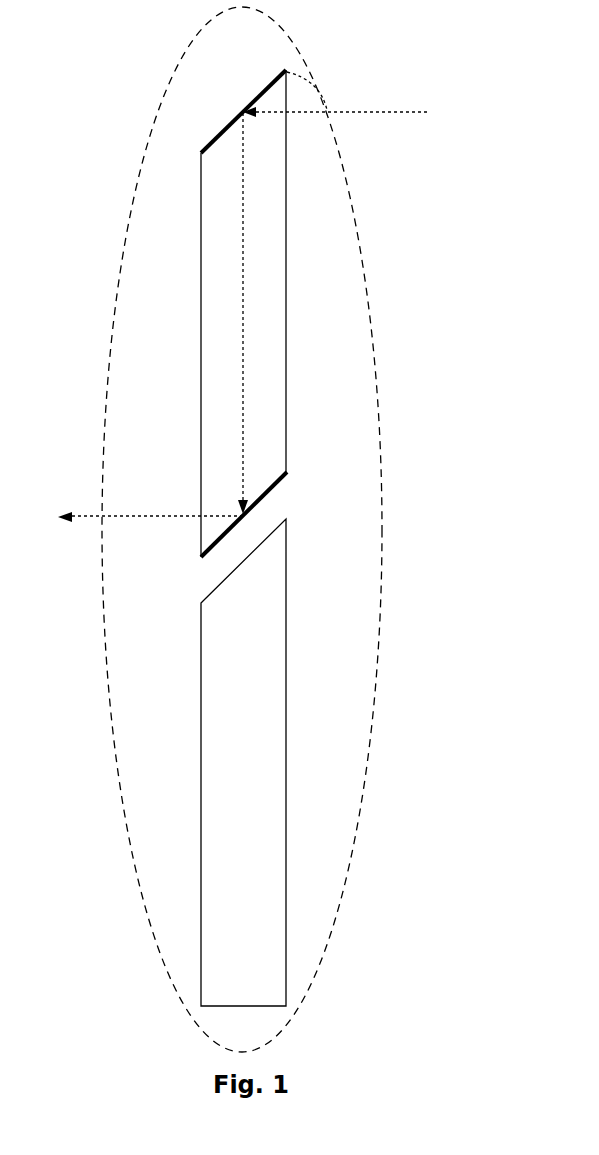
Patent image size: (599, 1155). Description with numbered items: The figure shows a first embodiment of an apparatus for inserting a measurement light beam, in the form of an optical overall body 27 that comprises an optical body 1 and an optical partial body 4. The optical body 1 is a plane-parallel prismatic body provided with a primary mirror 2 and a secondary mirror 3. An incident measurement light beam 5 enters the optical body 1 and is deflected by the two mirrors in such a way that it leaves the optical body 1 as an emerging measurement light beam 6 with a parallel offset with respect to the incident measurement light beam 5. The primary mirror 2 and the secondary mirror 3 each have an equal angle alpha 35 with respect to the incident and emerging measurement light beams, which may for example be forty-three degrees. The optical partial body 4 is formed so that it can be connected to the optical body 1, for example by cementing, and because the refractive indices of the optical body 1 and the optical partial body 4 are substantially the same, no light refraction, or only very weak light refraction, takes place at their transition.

The optical body 1 is at (273, 313).
The primary mirror 2 is at (270, 83).
The secondary mirror 3 is at (277, 484).
The optical partial body 4 is at (272, 762).
The incident measurement light beam 5 is at (361, 96).
The emerging measurement light beam 6 is at (153, 317).
The optical overall body 27 is at (289, 529).
The angle α 35 is at (334, 85).